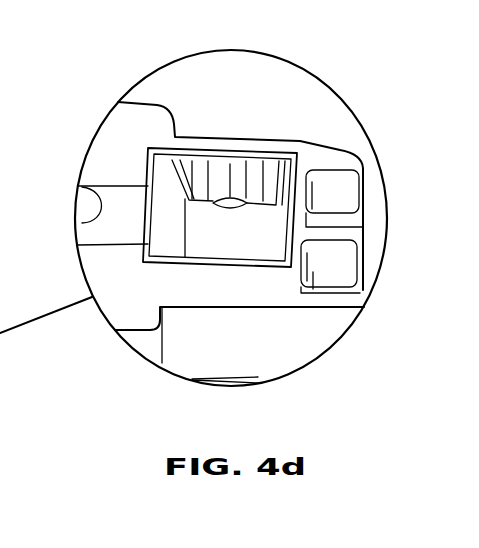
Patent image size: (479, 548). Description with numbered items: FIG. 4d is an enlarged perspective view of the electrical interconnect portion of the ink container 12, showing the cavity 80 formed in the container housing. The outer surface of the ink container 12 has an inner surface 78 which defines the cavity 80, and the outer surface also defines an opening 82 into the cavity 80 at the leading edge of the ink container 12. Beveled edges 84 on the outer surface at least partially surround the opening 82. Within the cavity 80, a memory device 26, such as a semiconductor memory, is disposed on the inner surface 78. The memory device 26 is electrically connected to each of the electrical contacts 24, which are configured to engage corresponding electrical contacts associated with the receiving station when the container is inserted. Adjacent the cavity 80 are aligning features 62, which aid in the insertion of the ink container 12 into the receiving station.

The ink container 12 is at (150, 94).
The electrical contacts 24 is at (195, 178).
The memory device 26 is at (232, 211).
The aligning features 62 is at (343, 162).
The inner surface 78 is at (161, 219).
The cavity 80 is at (158, 322).
The opening 82 is at (80, 186).
The beveled edges 84 is at (148, 165).